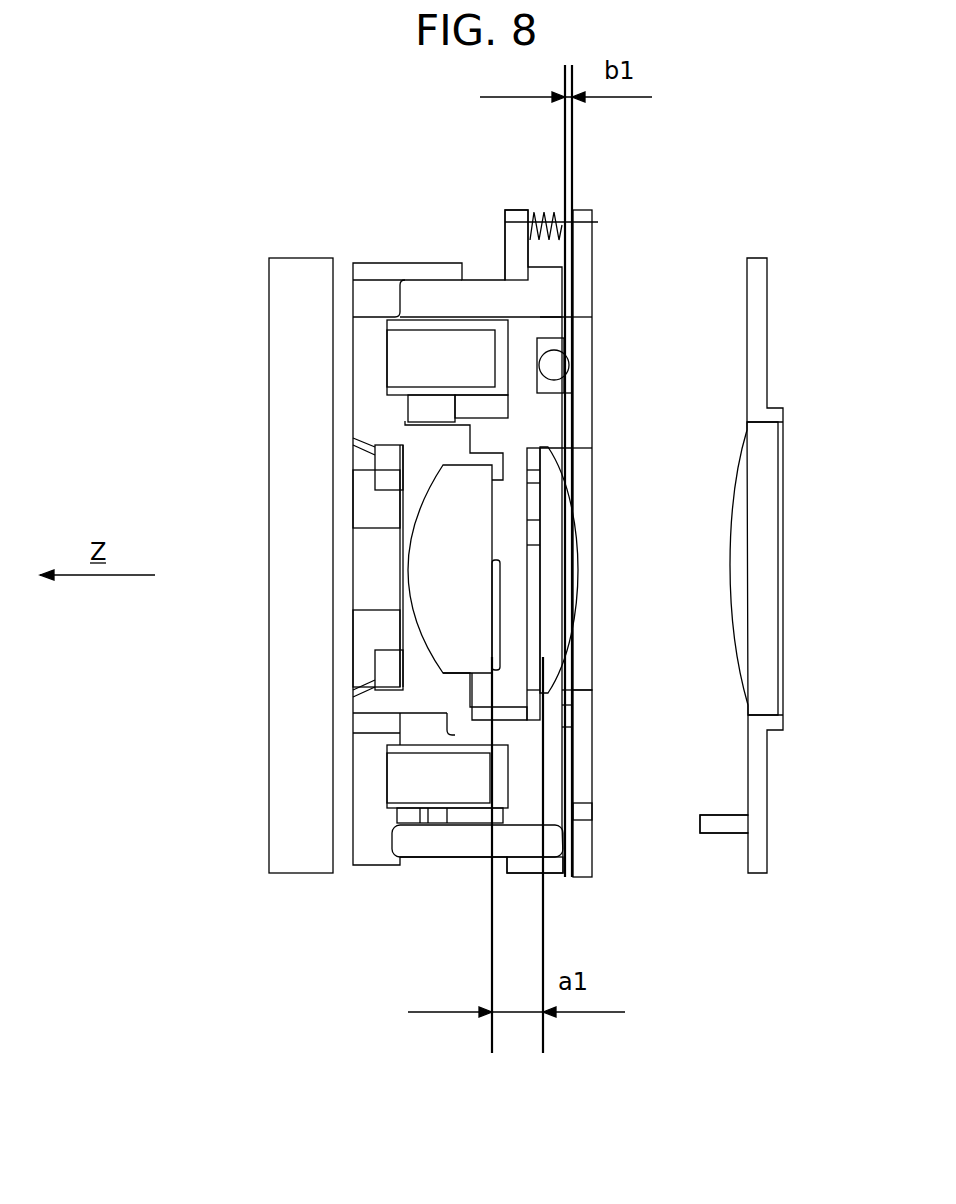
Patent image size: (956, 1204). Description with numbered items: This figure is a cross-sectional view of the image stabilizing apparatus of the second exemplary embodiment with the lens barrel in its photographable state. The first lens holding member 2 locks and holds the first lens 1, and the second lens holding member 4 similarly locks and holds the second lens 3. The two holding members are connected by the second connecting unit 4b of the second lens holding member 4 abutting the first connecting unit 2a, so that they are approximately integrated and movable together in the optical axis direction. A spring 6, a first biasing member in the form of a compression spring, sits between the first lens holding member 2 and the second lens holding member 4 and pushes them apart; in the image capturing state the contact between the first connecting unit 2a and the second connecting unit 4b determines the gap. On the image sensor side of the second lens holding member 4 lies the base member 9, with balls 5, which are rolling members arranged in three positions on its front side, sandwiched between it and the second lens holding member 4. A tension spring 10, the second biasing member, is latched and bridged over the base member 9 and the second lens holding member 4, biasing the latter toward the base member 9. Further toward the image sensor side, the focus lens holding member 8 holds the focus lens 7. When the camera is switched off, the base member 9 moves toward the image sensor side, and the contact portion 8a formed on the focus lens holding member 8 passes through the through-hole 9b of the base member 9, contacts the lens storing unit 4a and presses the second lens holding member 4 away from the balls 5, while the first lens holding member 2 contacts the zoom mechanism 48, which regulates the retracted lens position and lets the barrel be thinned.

The first lens 1 is at (435, 520).
The first lens holding member 2 is at (358, 400).
The first connecting unit 2a is at (540, 735).
The second lens 3 is at (552, 517).
The second lens holding member 4 is at (540, 330).
The lens storing unit 4a is at (468, 292).
The second connecting unit 4b is at (470, 742).
The ball 5 is at (555, 368).
The spring 6 is at (442, 327).
The focus lens 7 is at (762, 555).
The focus lens holding member 8 is at (757, 310).
The contact portion 8a is at (717, 823).
The base member 9 is at (585, 775).
The through-hole 9b is at (580, 818).
The spring 10 is at (548, 212).
The zoom mechanism 48 is at (292, 777).